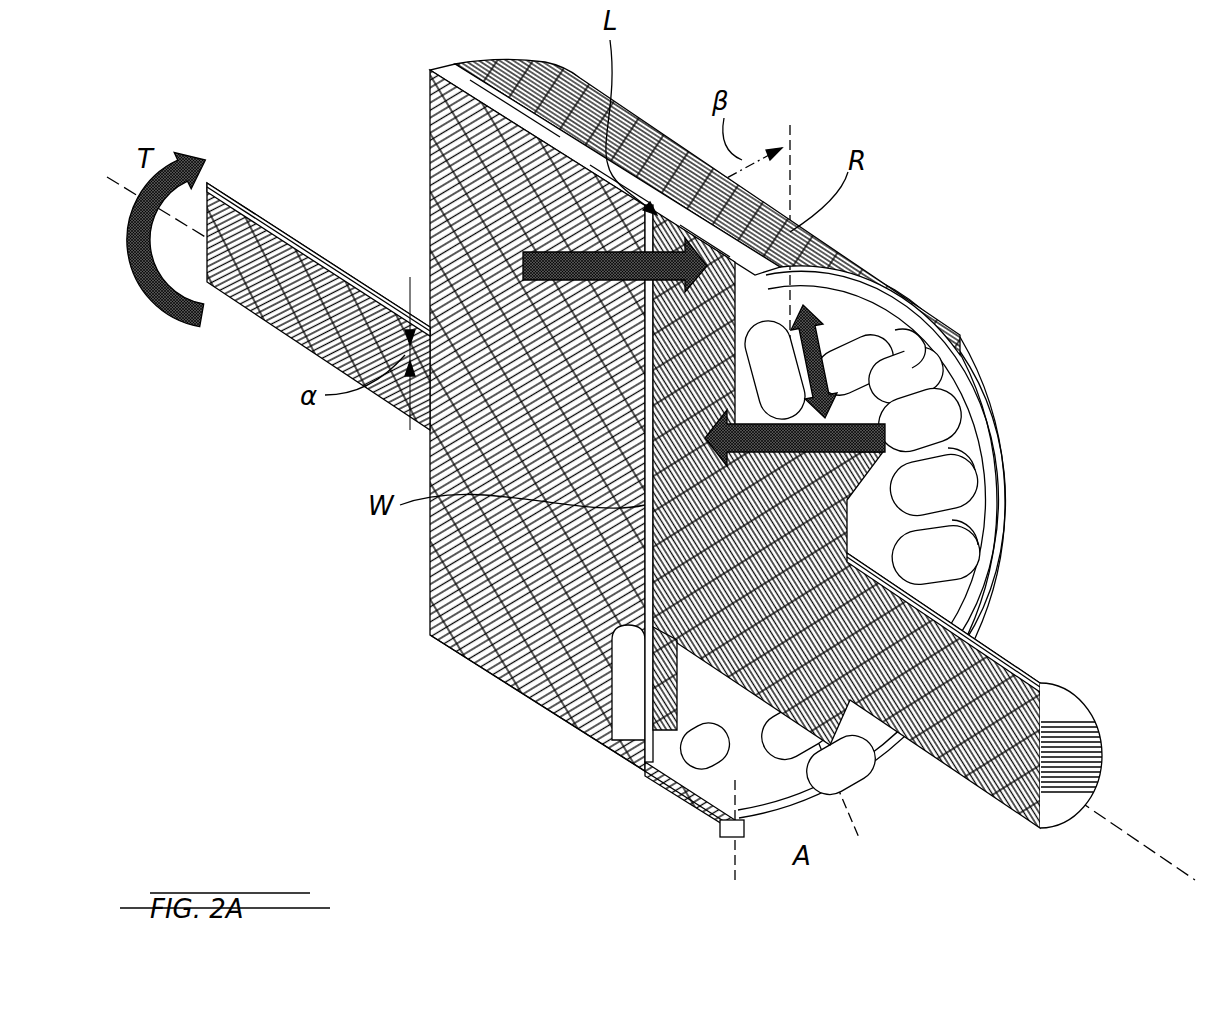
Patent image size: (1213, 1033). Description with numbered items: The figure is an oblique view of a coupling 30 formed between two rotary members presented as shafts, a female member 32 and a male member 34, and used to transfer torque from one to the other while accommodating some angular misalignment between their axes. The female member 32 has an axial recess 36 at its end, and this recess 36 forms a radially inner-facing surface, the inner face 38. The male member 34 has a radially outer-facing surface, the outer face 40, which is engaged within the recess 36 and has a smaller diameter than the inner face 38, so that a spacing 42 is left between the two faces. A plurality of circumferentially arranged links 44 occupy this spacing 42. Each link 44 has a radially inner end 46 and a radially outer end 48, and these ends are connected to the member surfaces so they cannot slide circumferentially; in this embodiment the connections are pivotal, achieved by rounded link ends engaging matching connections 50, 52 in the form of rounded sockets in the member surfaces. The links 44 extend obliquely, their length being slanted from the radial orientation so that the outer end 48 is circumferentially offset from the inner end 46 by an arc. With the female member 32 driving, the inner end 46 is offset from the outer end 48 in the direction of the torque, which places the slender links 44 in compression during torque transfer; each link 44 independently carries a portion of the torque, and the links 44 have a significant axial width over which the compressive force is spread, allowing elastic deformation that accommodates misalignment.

The coupling 30 is at (830, 110).
The female rotary member 32 is at (310, 240).
The male rotary member 34 is at (1040, 683).
The axial recess 36 is at (665, 705).
The inner face 38 is at (795, 300).
The outer face 40 is at (875, 340).
The spacing 42 is at (618, 628).
The links 44 is at (1005, 420).
The inner end 46 is at (935, 380).
The outer end 48 is at (905, 360).
The connection 50 is at (940, 440).
The connection 52 is at (970, 470).